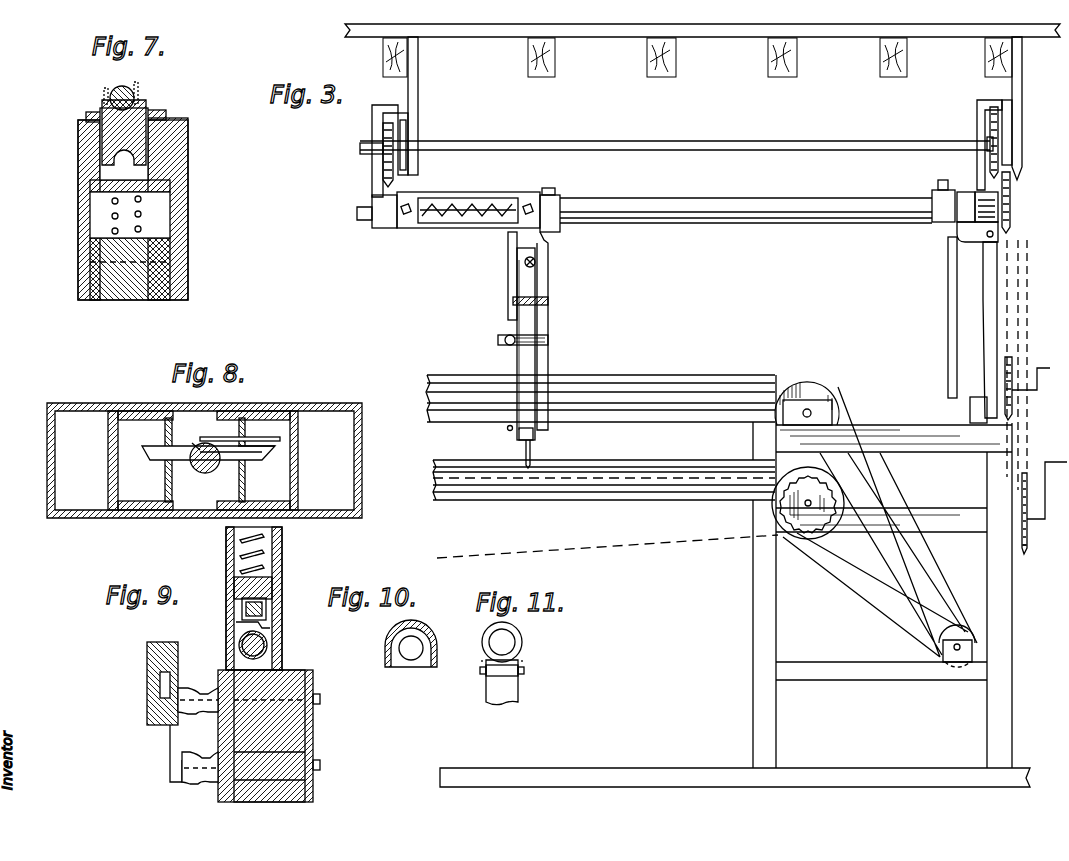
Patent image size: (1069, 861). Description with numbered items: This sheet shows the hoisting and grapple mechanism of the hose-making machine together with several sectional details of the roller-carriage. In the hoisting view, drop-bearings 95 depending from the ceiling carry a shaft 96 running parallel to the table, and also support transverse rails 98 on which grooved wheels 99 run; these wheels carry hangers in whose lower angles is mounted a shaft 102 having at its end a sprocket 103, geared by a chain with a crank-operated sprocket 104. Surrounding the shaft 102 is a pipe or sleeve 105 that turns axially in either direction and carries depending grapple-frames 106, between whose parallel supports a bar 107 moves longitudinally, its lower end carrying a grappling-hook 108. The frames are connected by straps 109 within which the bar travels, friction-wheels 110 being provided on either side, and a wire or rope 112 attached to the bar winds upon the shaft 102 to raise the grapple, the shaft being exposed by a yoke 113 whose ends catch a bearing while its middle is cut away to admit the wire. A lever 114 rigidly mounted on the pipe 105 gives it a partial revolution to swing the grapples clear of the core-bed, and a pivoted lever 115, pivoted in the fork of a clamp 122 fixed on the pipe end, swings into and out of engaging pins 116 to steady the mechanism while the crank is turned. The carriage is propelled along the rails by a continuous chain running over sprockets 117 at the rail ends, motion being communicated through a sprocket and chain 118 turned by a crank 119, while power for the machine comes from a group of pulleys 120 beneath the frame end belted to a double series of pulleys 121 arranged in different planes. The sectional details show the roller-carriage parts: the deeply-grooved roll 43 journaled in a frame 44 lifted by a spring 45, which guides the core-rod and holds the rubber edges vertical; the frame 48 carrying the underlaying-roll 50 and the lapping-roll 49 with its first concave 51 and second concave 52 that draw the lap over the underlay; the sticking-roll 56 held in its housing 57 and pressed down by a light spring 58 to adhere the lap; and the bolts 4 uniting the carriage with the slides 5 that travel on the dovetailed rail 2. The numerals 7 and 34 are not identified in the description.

In FIG. 9, the rail 2 is at (313, 742).
In FIG. 3, the rail 2 is at (646, 470).
In FIG. 9, the bolts 4 is at (194, 729).
In FIG. 9, the slides 5 is at (178, 666).
In FIG. 7, the slide 7 is at (108, 100).
In FIG. 8, the slide 7 is at (198, 470).
In FIG. 9, the slide 7 is at (272, 630).
In FIG. 7, the ball 34 is at (136, 100).
In FIG. 8, the ball 34 is at (212, 470).
In FIG. 9, the ball 34 is at (276, 650).
In FIG. 7, the deeply-grooved roll 43 is at (90, 155).
In FIG. 7, the frame 44 is at (90, 234).
In FIG. 7, the spring 45 is at (150, 213).
In FIG. 8, the frame 48 is at (262, 405).
In FIG. 8, the lapping-roll 49 is at (240, 433).
In FIG. 8, the underlaying-roll 50 is at (205, 444).
In FIG. 8, the first concave 51 is at (258, 452).
In FIG. 8, the second concave 52 is at (280, 445).
In FIG. 9, the sticking-roll 56 is at (270, 606).
In FIG. 9, the frame or housing 57 is at (280, 572).
In FIG. 9, the spring 58 is at (244, 552).
In FIG. 3, the drop-bearings 95 is at (418, 110).
In FIG. 3, the shaft 96 is at (675, 136).
In FIG. 3, the rails 98 is at (404, 142).
In FIG. 3, the grooved wheels 99 is at (398, 100).
In FIG. 3, the shaft 102 is at (454, 232).
In FIG. 10, the sprocket 103 is at (421, 635).
In FIG. 3, the sprocket 103 is at (1012, 210).
In FIG. 3, the sprocket 104 is at (1012, 410).
In FIG. 3, the pipe or sleeve 105 is at (677, 210).
In FIG. 3, the grapple-frames 106 is at (528, 358).
In FIG. 3, the bar 107 is at (520, 432).
In FIG. 3, the grappling-hook 108 is at (532, 455).
In FIG. 3, the straps 109 is at (548, 300).
In FIG. 3, the friction-wheels 110 is at (525, 266).
In FIG. 3, the wire or rope 112 is at (488, 204).
In FIG. 3, the yoke 113 is at (408, 228).
In FIG. 3, the lever 114 is at (948, 256).
In FIG. 11, the pivoted lever 115 is at (512, 696).
In FIG. 3, the pivoted lever 115 is at (990, 346).
In FIG. 3, the engaging pins 116 is at (972, 405).
In FIG. 3, the sprockets 117 is at (383, 133).
In FIG. 3, the sprocket and chain 118 is at (1026, 552).
In FIG. 3, the crank 119 is at (1030, 522).
In FIG. 3, the pulleys 120 is at (880, 527).
In FIG. 3, the pulleys 121 is at (820, 382).
In FIG. 11, the clamp 122 is at (520, 660).